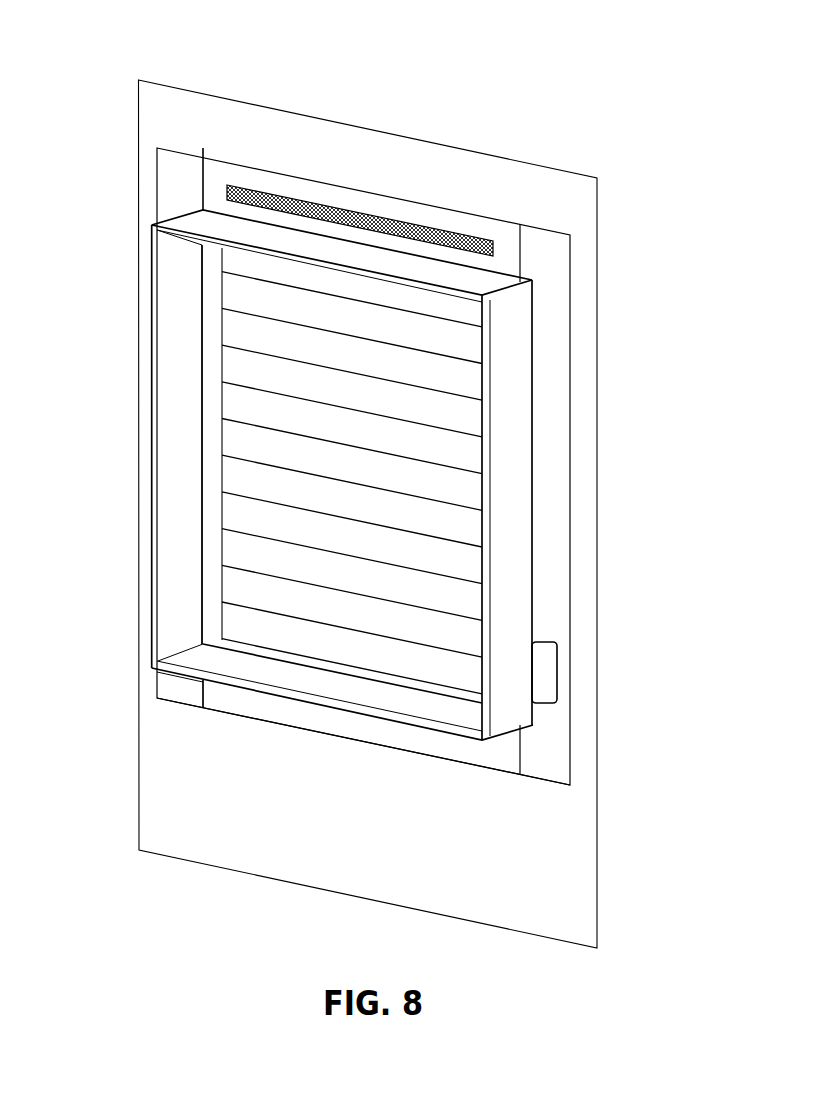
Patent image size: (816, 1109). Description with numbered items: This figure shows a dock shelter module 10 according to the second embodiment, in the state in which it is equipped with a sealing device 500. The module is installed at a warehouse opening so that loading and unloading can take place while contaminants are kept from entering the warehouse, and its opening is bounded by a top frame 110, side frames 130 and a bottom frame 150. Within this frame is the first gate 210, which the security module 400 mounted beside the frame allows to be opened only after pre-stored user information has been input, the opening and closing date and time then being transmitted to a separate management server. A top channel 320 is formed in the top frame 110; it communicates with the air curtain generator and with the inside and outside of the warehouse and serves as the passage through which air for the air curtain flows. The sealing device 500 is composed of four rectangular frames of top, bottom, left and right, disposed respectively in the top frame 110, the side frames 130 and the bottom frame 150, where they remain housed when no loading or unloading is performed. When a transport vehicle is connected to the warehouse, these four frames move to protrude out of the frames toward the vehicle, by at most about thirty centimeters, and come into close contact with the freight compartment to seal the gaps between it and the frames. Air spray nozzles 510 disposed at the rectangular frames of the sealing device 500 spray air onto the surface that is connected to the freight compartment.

The dock shelter module 10 is at (95, 38).
The top frame 110 is at (243, 177).
The side frames 130 is at (165, 685).
The bottom frame 150 is at (231, 702).
The first gate 210 is at (243, 471).
The top channel 320 is at (366, 226).
The security module 400 is at (548, 678).
The sealing device 500 is at (513, 389).
The air spray nozzles 510 is at (482, 473).